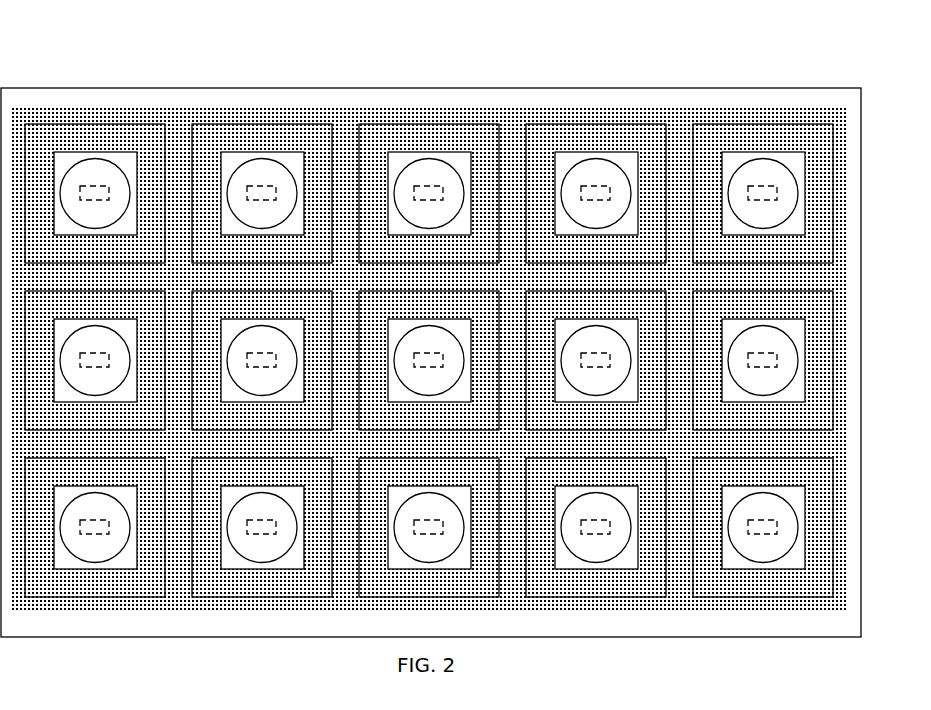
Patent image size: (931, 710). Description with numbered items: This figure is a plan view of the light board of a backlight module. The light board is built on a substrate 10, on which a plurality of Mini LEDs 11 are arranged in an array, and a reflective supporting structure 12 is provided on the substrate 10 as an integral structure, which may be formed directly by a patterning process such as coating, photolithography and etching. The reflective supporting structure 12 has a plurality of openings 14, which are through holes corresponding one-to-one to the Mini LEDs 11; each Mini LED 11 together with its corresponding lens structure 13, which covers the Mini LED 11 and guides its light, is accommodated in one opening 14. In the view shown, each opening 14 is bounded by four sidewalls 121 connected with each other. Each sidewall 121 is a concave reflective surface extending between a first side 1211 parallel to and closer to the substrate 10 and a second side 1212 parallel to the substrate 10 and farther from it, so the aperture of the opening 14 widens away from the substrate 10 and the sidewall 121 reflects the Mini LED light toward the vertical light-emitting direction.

The substrate 10 is at (430, 88).
The Mini LED 11 is at (100, 187).
The reflective supporting structure 12 is at (190, 128).
The sidewall 121 is at (665, 143).
The first side 1211 is at (638, 187).
The second side 1212 is at (665, 225).
The lens structure 13 is at (72, 170).
The opening 14 is at (288, 163).